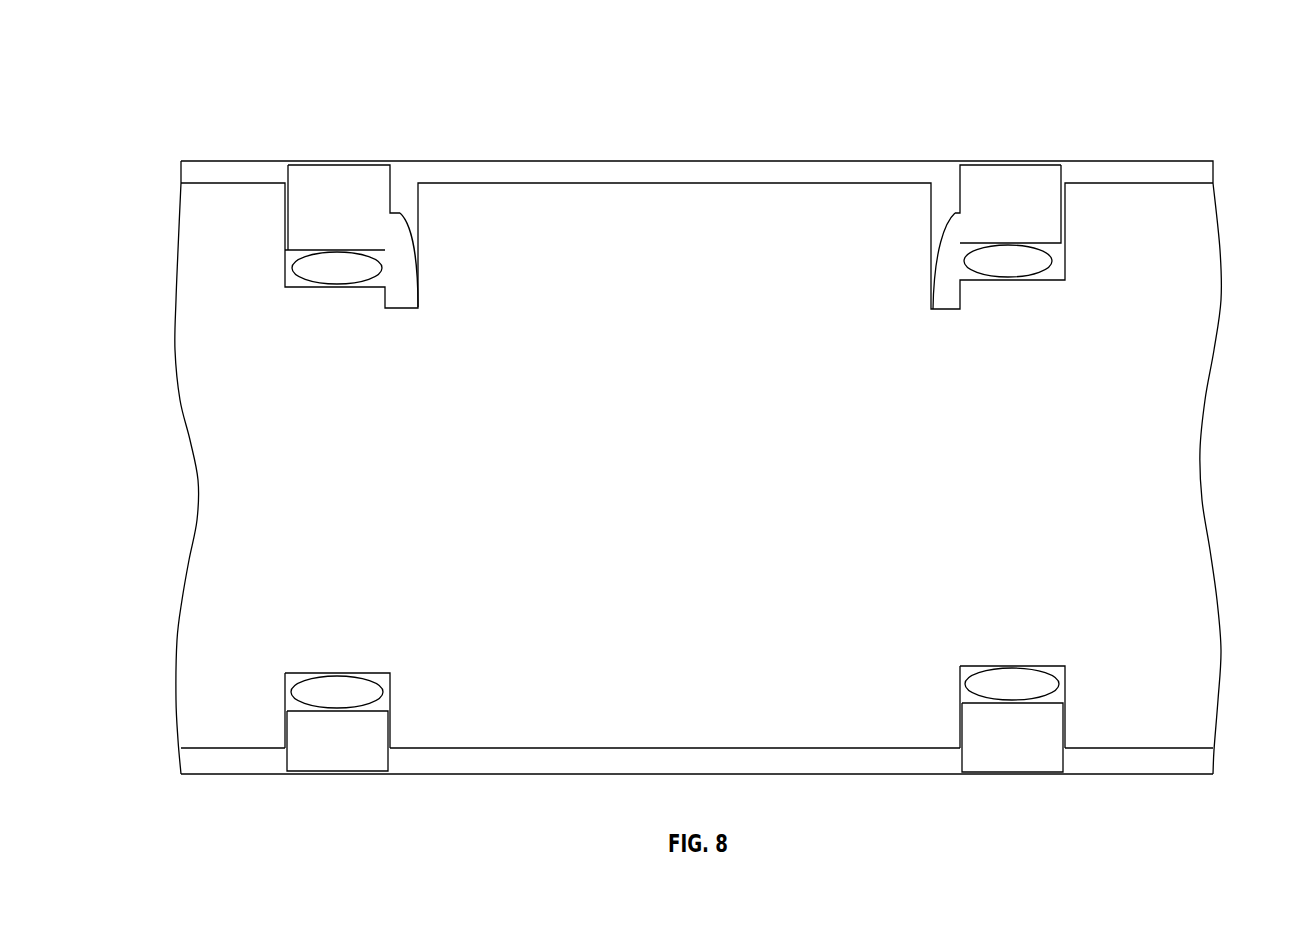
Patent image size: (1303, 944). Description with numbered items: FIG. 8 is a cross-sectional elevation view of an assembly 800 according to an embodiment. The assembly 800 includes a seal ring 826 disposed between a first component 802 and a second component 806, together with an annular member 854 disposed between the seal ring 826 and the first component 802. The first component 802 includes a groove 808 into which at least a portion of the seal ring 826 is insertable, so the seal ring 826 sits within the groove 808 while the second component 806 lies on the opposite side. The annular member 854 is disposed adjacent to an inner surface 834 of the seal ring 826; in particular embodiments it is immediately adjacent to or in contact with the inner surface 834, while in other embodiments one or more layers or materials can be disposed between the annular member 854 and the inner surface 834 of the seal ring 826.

The assembly 800 is at (709, 453).
The first component 802 is at (1116, 749).
The second component 806 is at (485, 776).
The groove 808 is at (403, 190).
The seal ring 826 is at (353, 211).
The inner surface 834 is at (290, 252).
The annular member 854 is at (373, 276).